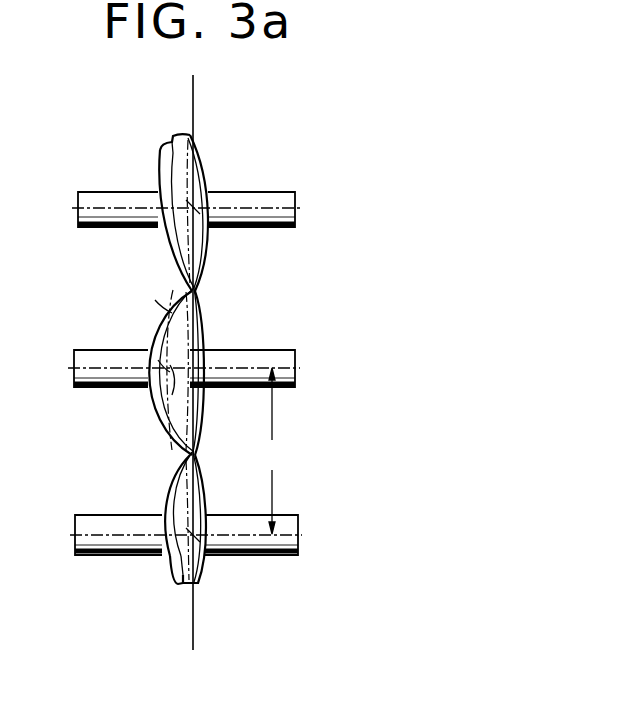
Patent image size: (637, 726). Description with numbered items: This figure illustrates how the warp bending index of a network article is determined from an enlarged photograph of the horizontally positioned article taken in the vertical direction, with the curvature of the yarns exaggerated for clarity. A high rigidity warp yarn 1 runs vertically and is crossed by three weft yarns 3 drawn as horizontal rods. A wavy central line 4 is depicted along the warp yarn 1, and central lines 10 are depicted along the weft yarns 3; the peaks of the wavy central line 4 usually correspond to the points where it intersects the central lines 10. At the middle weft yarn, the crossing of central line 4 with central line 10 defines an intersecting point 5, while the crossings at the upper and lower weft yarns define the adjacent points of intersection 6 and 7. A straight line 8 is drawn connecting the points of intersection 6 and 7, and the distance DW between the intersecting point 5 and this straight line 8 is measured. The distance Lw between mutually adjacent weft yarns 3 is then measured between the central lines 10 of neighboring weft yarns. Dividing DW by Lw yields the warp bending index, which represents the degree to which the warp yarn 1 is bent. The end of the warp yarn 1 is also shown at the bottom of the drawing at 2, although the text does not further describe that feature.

The high rigidity warp yarn 1 is at (168, 280).
The band end tab 2 is at (168, 570).
The weft yarns 3 is at (107, 195).
The central line 4 is at (170, 310).
The intersecting point 5 is at (168, 368).
The point of intersection 6 is at (193, 210).
The point of intersection 7 is at (190, 531).
The straight line 8 is at (195, 607).
The central lines of weft yarns 10 is at (263, 210).
The warp displacement distance DW is at (168, 392).
The distance between mutually-adjacent weft yarns Lw is at (274, 451).